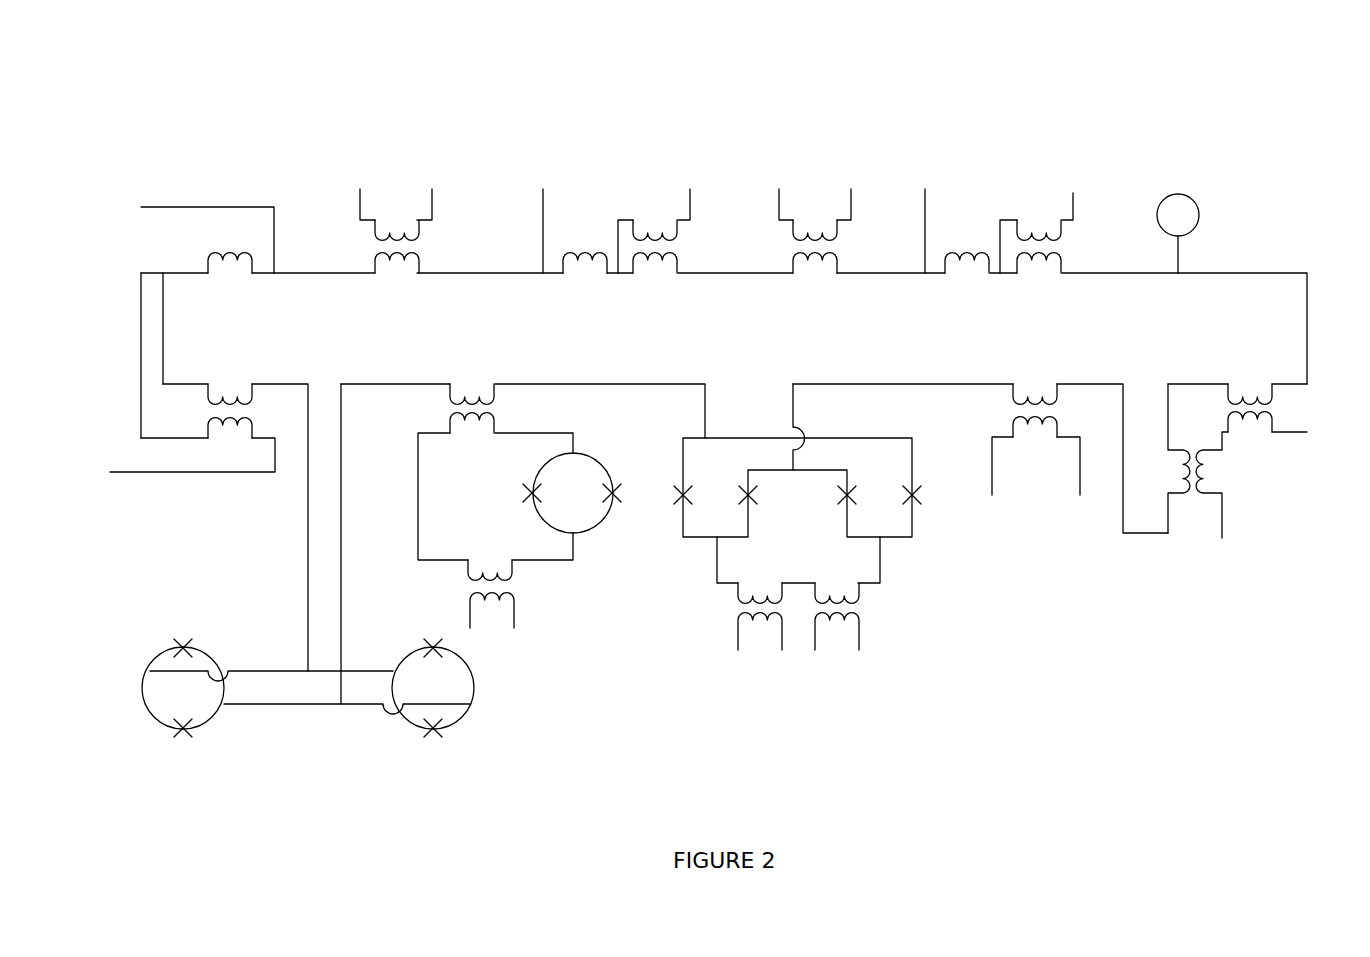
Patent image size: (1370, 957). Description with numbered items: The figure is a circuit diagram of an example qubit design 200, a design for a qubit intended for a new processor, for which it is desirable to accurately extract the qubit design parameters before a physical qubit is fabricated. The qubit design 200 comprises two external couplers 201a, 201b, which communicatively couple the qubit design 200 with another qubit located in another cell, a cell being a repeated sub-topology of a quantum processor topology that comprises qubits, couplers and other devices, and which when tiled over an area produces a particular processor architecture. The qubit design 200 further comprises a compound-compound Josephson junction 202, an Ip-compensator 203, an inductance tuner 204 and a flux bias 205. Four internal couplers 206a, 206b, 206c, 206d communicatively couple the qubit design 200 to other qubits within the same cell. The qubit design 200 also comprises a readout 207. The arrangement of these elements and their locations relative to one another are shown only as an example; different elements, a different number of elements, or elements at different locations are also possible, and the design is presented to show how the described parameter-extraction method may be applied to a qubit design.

The qubit design 200 is at (719, 428).
The external coupler 201a is at (192, 492).
The external coupler 201b is at (1265, 521).
The compound-compound Josephson junction 202 is at (293, 748).
The Ip-compensator 203 is at (553, 607).
The inductance tuner 204 is at (918, 587).
The flux bias 205 is at (1024, 527).
The internal coupler 206a is at (391, 166).
The internal coupler 206b is at (578, 164).
The internal coupler 206c is at (793, 156).
The internal coupler 206d is at (980, 158).
The readout 207 is at (1208, 170).